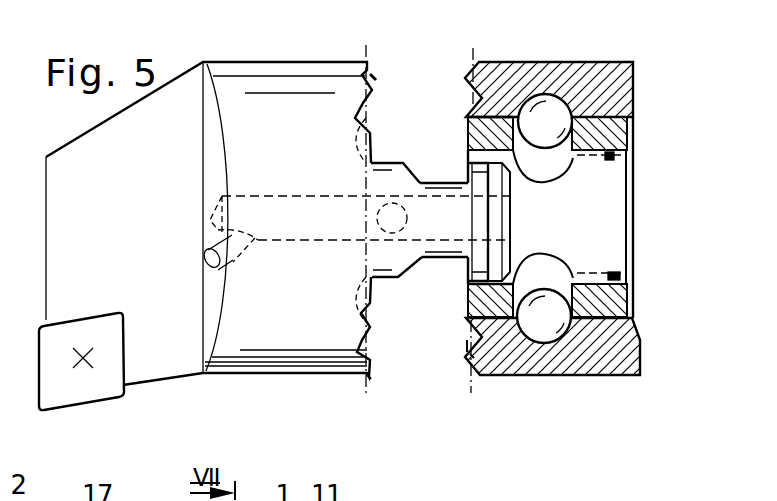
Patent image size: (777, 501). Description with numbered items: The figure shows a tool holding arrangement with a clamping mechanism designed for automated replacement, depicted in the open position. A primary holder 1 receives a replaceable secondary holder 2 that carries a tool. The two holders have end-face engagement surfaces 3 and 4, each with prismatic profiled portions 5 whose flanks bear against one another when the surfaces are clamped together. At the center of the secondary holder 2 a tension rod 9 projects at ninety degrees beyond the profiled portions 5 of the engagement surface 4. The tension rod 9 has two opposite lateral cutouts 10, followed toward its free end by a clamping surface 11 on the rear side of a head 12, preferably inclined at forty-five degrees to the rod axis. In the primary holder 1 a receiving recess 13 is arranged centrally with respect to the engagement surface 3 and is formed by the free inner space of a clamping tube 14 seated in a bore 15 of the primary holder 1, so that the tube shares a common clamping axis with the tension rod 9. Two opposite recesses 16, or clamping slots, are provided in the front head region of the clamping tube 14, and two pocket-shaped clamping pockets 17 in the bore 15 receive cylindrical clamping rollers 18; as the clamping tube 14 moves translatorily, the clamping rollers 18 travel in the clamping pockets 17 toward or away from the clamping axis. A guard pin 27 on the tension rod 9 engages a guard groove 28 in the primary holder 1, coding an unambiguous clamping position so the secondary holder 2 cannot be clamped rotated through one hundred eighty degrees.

The primary holder 1 is at (588, 84).
The secondary holder 2 is at (232, 73).
The engagement surface 3 is at (457, 356).
The engagement surface 4 is at (374, 76).
The profiled portions 5 is at (370, 379).
The tension rod 9 is at (390, 173).
The lateral cutouts 10 is at (434, 182).
The clamping surface 11 is at (458, 288).
The head 12 is at (513, 238).
The receiving recess 13 is at (614, 157).
The clamping tube 14 is at (620, 303).
The bore 15 is at (488, 116).
The recesses 16 is at (520, 113).
The clamping pockets 17 is at (590, 85).
The clamping rollers 18 is at (550, 108).
The guard pin 27 is at (391, 224).
The guard groove 28 is at (513, 207).